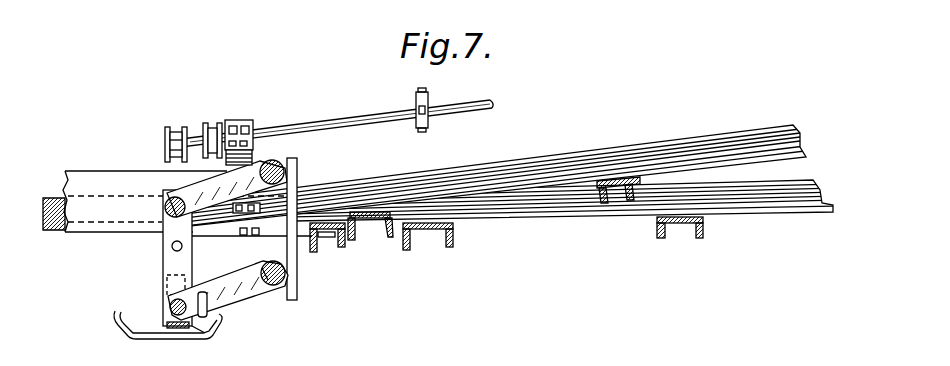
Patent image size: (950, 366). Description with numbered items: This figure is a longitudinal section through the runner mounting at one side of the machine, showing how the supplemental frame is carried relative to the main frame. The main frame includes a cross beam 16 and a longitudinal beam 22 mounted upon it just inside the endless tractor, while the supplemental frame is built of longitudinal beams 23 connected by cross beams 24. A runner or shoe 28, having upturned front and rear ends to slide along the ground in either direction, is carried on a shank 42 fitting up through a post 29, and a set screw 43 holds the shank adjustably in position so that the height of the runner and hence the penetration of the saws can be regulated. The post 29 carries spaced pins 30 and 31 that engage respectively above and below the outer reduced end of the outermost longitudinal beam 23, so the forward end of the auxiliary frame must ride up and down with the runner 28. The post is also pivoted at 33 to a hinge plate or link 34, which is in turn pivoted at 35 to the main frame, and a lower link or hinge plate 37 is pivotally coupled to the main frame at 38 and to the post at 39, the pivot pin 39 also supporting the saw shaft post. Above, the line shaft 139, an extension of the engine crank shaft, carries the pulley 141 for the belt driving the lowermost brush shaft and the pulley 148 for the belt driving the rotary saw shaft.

The cross beam 16 is at (342, 252).
The longitudinal beam 22 is at (527, 219).
The longitudinal beam 23 is at (398, 187).
The cross beam 24 is at (389, 241).
The runner 28 is at (156, 334).
The post 29 is at (163, 280).
The pin 30 is at (161, 217).
The pin 31 is at (182, 246).
The pivot 33 is at (175, 197).
The hinge plate 34 is at (258, 166).
The pivot 35 is at (297, 163).
The lower link 37 is at (262, 268).
The pivot 38 is at (282, 288).
The pivot pin 39 is at (170, 304).
The shank 42 is at (202, 333).
The set screw 43 is at (207, 313).
The line shaft 139 is at (447, 112).
The pulley 141 is at (222, 124).
The pulley 148 is at (171, 129).